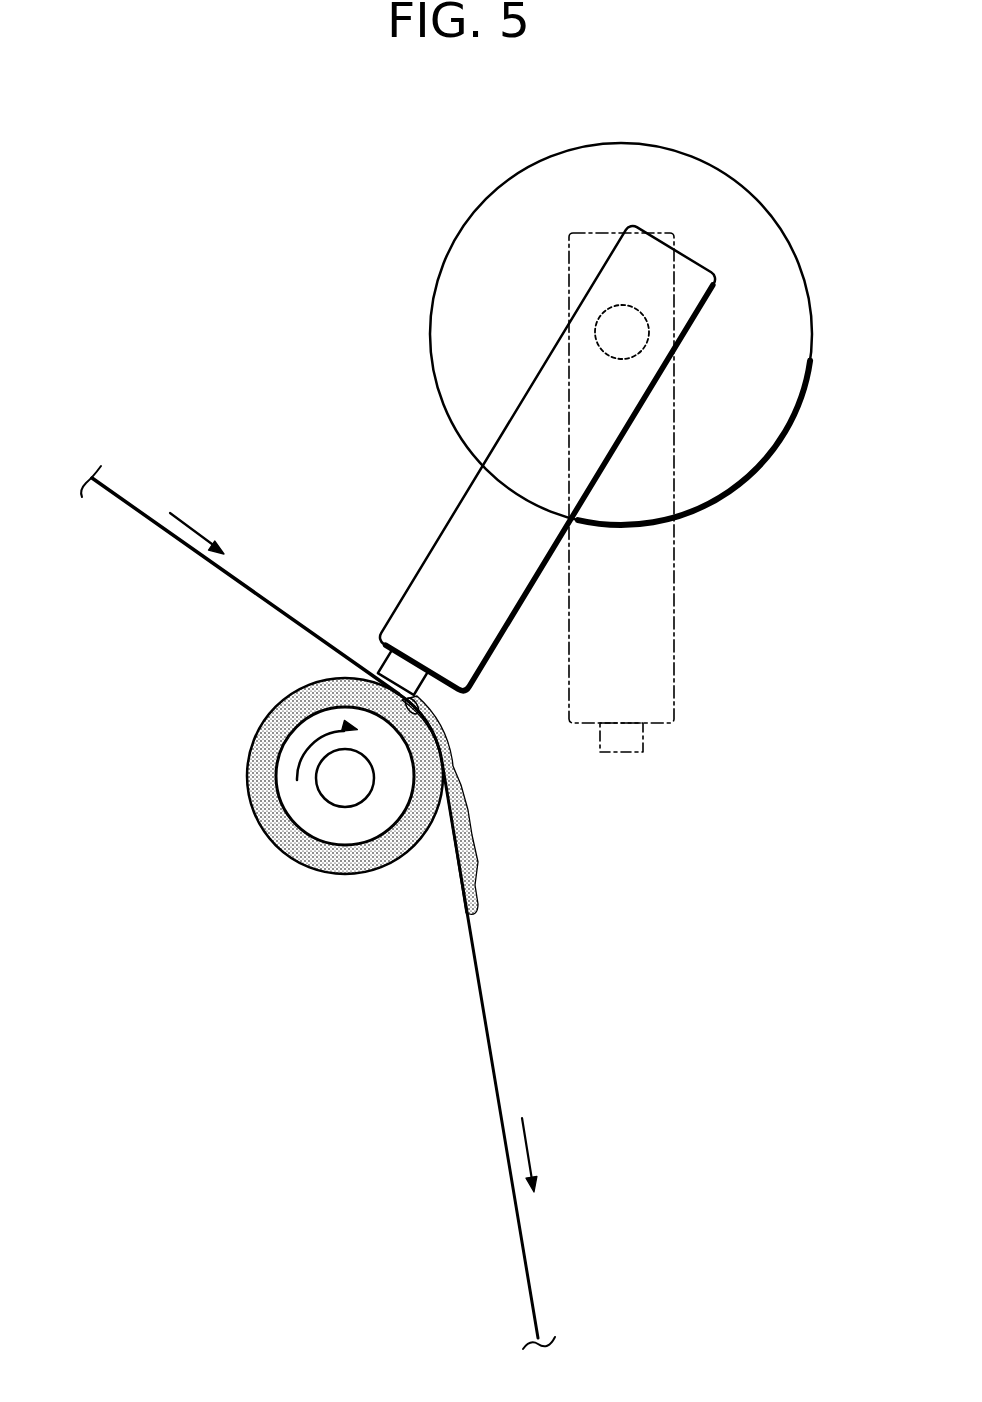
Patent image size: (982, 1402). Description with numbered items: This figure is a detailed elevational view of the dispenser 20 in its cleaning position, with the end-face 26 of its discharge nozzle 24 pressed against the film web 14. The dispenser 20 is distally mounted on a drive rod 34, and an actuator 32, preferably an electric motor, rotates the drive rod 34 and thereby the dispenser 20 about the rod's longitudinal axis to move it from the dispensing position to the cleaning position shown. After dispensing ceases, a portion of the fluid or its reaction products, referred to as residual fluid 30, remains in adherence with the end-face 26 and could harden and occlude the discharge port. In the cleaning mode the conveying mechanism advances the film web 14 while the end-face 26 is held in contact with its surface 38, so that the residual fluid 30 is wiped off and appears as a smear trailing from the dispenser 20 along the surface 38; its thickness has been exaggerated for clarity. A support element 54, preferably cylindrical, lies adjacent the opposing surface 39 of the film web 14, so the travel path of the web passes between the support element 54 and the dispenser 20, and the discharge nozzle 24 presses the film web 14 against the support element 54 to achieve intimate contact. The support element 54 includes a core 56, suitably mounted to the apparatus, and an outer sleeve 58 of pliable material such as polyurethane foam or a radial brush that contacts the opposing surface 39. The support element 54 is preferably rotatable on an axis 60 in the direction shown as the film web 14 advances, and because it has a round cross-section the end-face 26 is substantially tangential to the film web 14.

The film web 14 is at (262, 592).
The dispenser 20 is at (622, 692).
The discharge nozzle 24 is at (393, 658).
The end-face 26 is at (435, 722).
The residual fluid 30 is at (455, 788).
The actuator 32 is at (692, 186).
The drive rod 34 is at (600, 342).
The surface of film web 38 is at (490, 1047).
The opposing surface of film web 39 is at (478, 993).
The support element 54 is at (253, 817).
The core 56 is at (307, 823).
The outer sleeve 58 is at (320, 876).
The axis 60 is at (327, 768).